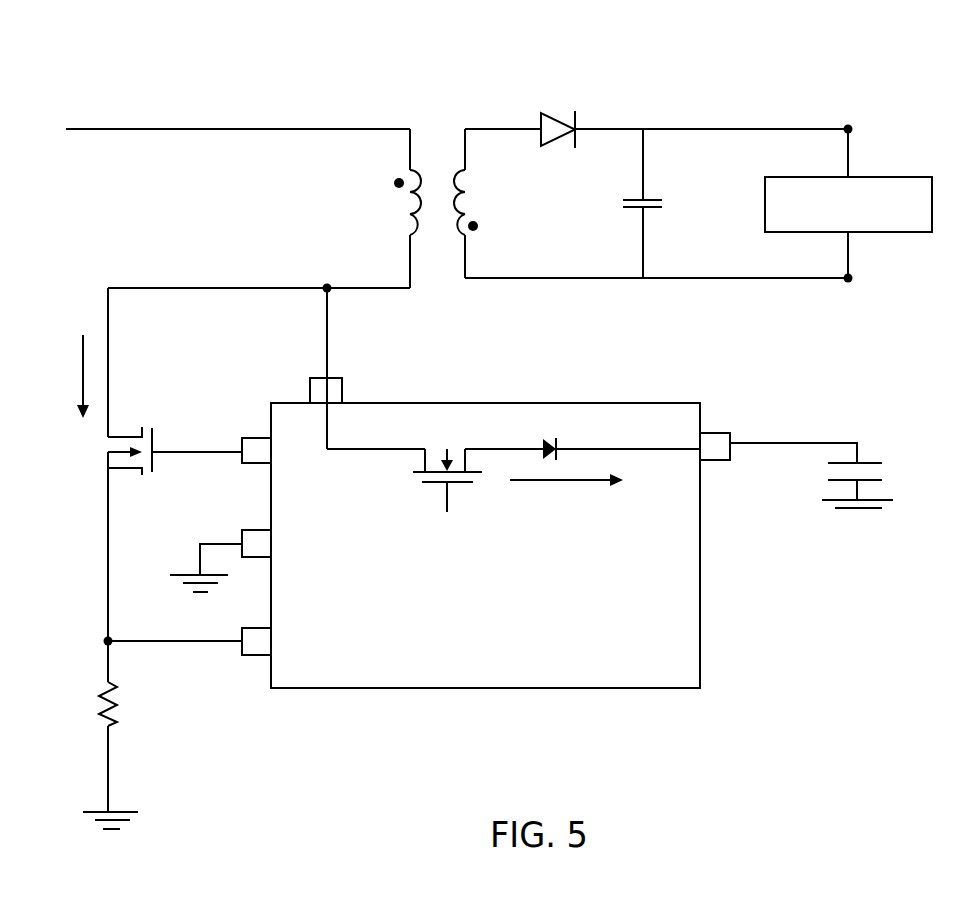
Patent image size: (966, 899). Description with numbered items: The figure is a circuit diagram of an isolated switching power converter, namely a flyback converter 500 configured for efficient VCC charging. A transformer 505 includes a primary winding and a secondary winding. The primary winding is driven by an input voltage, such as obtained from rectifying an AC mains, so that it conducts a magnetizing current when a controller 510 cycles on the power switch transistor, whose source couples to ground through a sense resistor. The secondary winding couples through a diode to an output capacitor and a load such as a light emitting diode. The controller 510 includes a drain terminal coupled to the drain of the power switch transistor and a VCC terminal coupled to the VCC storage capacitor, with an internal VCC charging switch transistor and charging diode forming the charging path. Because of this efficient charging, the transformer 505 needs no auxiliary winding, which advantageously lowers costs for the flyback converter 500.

The flyback converter 500 is at (652, 37).
The transformer 505 is at (435, 106).
The controller 510 is at (507, 688).